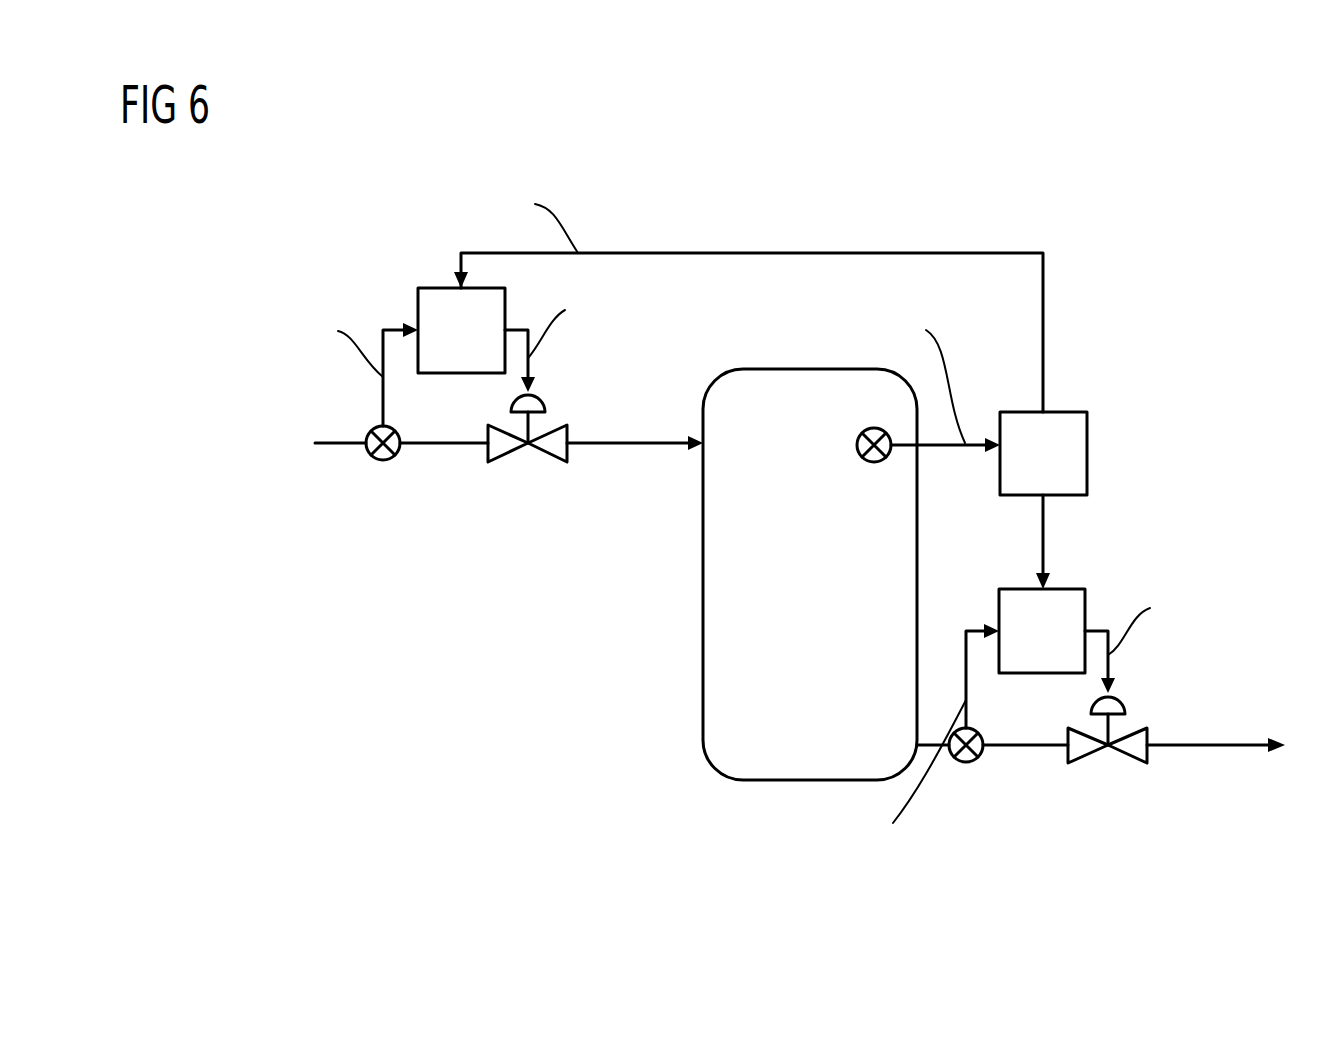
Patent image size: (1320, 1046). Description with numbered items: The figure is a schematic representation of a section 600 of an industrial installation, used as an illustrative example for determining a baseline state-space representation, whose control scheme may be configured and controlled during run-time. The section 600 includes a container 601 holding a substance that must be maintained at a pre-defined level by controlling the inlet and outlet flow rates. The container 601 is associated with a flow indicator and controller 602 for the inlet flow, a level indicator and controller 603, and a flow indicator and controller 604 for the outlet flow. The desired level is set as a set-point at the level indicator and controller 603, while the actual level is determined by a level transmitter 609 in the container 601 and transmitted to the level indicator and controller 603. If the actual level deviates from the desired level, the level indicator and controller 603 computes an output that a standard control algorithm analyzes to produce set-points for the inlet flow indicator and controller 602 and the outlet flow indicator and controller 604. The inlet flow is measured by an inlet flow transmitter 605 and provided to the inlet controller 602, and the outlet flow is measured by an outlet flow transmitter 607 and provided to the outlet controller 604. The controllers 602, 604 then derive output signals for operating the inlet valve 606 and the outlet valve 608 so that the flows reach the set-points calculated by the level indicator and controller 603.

The section 600 is at (1120, 165).
The container 601 is at (789, 582).
The flow indicator and controller 602 is at (439, 347).
The level indicator and controller 603 is at (1021, 468).
The flow indicator and controller 604 is at (1020, 647).
The inlet flow transmitter 605 is at (371, 462).
The valve 606 is at (543, 453).
The outlet flow transmitter 607 is at (980, 762).
The valve 608 is at (1128, 758).
The level transmitter 609 is at (857, 451).